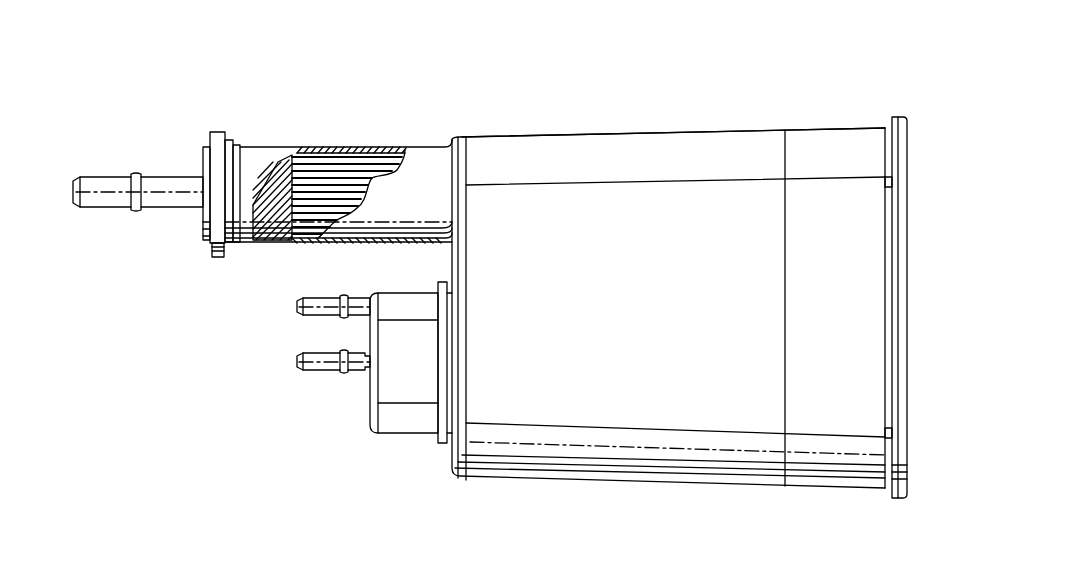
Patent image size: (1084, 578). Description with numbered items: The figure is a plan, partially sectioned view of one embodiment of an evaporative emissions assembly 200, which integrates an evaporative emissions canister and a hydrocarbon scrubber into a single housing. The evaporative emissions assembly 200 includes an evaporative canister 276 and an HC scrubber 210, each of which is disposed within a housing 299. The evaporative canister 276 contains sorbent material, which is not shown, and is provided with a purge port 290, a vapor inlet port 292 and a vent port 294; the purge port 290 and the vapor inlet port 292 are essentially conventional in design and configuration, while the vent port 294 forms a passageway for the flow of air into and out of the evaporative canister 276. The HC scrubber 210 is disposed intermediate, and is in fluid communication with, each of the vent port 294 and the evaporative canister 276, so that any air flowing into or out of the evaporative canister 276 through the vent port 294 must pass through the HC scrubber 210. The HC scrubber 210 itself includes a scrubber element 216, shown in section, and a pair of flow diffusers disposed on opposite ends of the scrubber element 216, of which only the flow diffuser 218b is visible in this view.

The evaporative emissions assembly 200 is at (600, 52).
The HC scrubber 210 is at (203, 131).
The scrubber element 216 is at (343, 150).
The flow diffuser 218b is at (267, 247).
The evaporative canister 276 is at (733, 124).
The purge port 290 is at (310, 372).
The vapor inlet port 292 is at (310, 317).
The vent port 294 is at (103, 173).
The housing 299 is at (507, 143).